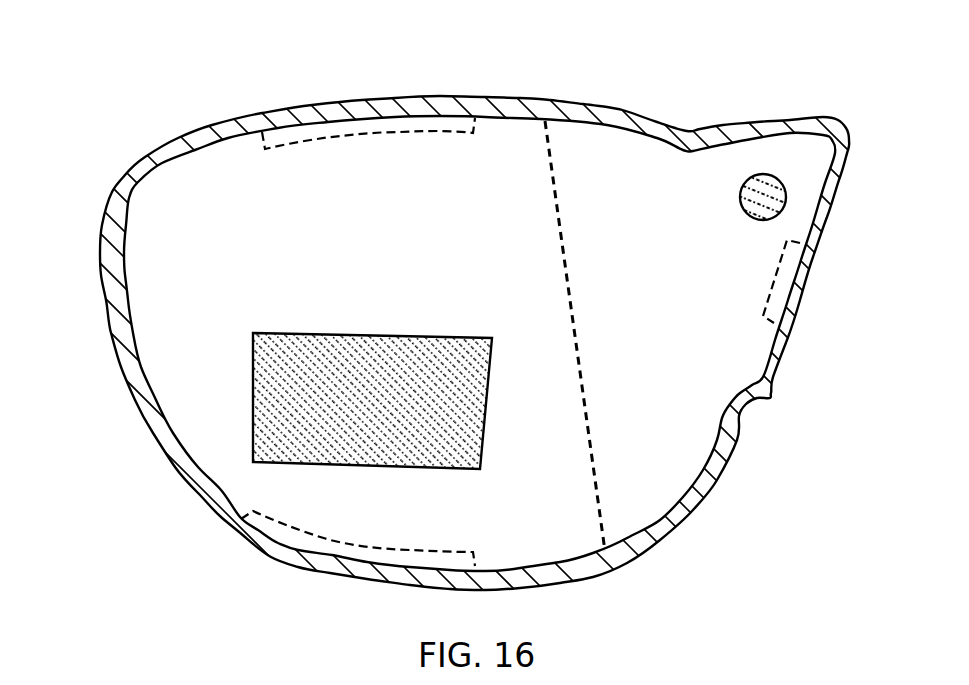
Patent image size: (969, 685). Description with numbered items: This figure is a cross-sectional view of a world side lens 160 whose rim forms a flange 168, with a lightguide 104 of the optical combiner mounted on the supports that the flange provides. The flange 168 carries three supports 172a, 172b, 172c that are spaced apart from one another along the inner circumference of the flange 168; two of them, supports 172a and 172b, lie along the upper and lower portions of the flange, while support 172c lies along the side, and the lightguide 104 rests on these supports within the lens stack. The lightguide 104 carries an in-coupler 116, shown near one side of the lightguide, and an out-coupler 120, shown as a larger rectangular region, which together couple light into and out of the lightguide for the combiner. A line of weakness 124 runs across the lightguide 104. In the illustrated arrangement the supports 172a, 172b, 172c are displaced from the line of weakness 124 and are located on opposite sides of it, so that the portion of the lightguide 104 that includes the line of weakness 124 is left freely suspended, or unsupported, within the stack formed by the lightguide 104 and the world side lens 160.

The lightguide 104 is at (150, 207).
The world side lens 160 is at (203, 127).
The flange 168 is at (328, 112).
The support 172a is at (413, 127).
The support 172b is at (367, 550).
The support 172c is at (787, 277).
The line of weakness 124 is at (555, 147).
The in-coupler 116 is at (765, 193).
The out-coupler 120 is at (295, 442).